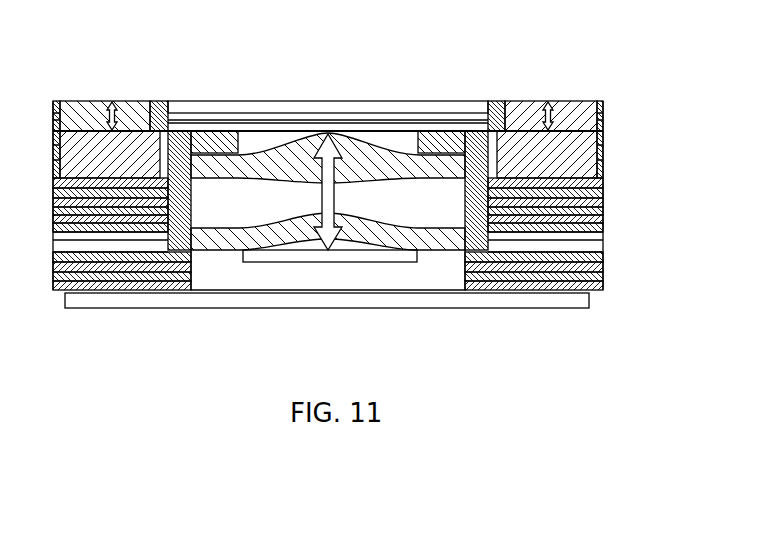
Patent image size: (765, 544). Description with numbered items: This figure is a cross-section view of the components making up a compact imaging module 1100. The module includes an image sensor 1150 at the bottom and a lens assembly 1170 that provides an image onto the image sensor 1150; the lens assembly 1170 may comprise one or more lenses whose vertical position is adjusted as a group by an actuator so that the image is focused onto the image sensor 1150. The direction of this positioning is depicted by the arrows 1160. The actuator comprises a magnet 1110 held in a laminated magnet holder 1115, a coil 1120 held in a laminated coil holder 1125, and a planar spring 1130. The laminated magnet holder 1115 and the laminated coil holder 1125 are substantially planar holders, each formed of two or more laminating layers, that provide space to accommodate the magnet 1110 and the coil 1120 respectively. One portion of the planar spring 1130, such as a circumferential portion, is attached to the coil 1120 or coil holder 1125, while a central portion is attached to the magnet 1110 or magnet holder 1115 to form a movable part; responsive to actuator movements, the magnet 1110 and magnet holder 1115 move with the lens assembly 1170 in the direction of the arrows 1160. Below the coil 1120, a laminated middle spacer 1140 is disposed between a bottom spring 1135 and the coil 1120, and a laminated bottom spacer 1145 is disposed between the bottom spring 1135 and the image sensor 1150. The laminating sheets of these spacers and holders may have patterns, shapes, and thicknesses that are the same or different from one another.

The compact imaging module 1100 is at (278, 40).
The magnet 1110 is at (585, 100).
The laminated magnet holder 1115 is at (603, 118).
The coil 1120 is at (575, 164).
The laminated coil holder 1125 is at (603, 163).
The planar spring 1130 is at (603, 131).
The bottom spring 1135 is at (563, 250).
The laminated middle spacer 1140 is at (613, 178).
The laminated bottom spacer 1145 is at (613, 250).
The image sensor 1150 is at (268, 310).
The arrow 1160 is at (112, 100).
The lens assembly 1170 is at (392, 118).